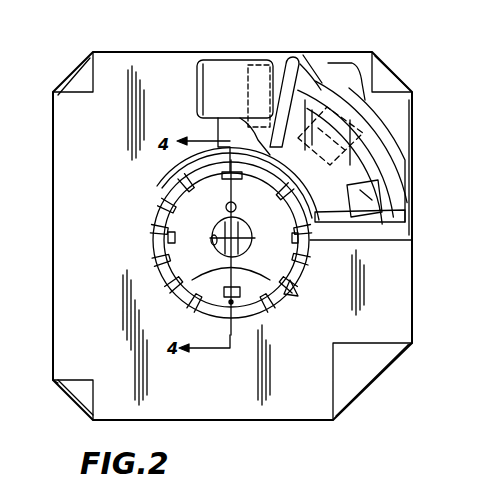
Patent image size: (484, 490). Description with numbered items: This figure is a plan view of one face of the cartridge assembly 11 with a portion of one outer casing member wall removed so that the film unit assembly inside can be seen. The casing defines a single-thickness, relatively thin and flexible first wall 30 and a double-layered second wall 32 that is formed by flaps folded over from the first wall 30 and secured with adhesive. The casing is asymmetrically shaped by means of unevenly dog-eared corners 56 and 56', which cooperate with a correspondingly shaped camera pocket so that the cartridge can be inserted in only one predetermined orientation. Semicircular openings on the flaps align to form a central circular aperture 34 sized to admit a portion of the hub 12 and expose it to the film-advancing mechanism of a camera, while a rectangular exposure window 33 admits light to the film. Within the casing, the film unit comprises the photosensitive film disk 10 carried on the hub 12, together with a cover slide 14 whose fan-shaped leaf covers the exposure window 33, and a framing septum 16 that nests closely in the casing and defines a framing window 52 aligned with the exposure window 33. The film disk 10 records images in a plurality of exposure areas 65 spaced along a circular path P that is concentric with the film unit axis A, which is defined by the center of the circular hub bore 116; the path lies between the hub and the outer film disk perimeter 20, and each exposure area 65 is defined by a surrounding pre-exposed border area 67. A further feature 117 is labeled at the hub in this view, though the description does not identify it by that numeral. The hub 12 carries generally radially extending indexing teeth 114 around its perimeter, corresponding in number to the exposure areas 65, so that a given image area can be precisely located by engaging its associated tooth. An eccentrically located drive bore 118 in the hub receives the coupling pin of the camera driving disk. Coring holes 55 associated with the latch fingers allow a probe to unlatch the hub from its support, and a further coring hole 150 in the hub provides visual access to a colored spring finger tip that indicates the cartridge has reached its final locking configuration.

The film disk 10 is at (392, 150).
The cartridge assembly 11 is at (260, 424).
The hub 12 is at (229, 240).
The cover slide 14 is at (296, 58).
The framing septum 16 is at (313, 62).
The outer film disk perimeter 20 is at (342, 64).
The first wall 30 is at (386, 118).
The second wall 32 is at (312, 366).
The exposure window 33 is at (206, 60).
The central circular aperture 34 is at (195, 164).
The framing window 52 is at (259, 65).
The coring holes 55 is at (240, 182).
The dog-eared corner 56 is at (56, 406).
The dog-eared corner 56' is at (387, 386).
The exposure areas 65 is at (378, 133).
The border area 67 is at (376, 176).
The indexing teeth 114 is at (291, 282).
The central hub bore 116 is at (212, 240).
The shaft 117 is at (229, 259).
The drive bore 118 is at (226, 205).
The coring hole 150 is at (212, 296).
The film unit axis A is at (242, 237).
The circular exposure arc path P is at (386, 178).